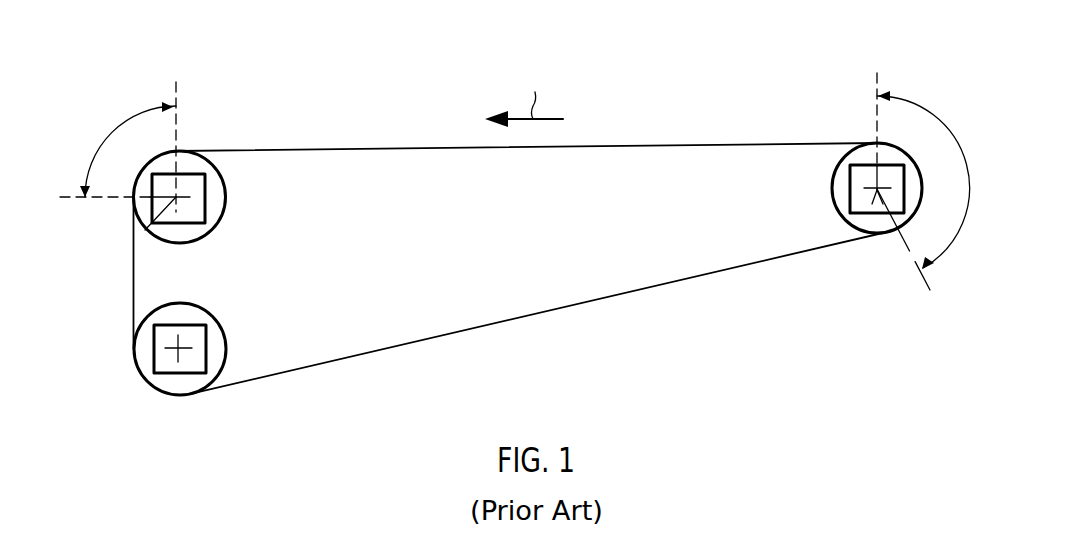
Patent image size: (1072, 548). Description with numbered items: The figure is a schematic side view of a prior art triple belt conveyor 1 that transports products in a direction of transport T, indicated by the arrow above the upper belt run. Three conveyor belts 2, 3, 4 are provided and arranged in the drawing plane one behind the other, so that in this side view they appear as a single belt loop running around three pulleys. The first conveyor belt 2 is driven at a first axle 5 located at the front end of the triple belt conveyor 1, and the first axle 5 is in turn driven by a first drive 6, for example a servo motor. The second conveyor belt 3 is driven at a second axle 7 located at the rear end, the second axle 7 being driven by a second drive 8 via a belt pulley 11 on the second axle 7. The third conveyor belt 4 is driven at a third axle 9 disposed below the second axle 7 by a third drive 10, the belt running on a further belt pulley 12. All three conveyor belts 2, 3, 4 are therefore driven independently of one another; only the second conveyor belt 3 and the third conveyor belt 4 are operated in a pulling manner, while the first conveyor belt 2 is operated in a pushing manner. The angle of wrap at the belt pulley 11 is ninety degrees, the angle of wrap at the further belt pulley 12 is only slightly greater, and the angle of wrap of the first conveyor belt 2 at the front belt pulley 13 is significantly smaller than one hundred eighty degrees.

The triple belt conveyor 1 is at (552, 231).
The first conveyor belt 2 is at (511, 240).
The second conveyor belt 3 is at (511, 240).
The third conveyor belt 4 is at (652, 135).
The first axle 5 is at (877, 192).
The first drive 6 is at (859, 213).
The second axle 7 is at (133, 242).
The second drive 8 is at (152, 204).
The third axle 9 is at (175, 346).
The third drive 10 is at (157, 357).
The belt pulley 11 is at (171, 162).
The further belt pulley 12 is at (178, 349).
The front belt pulley 13 is at (850, 188).